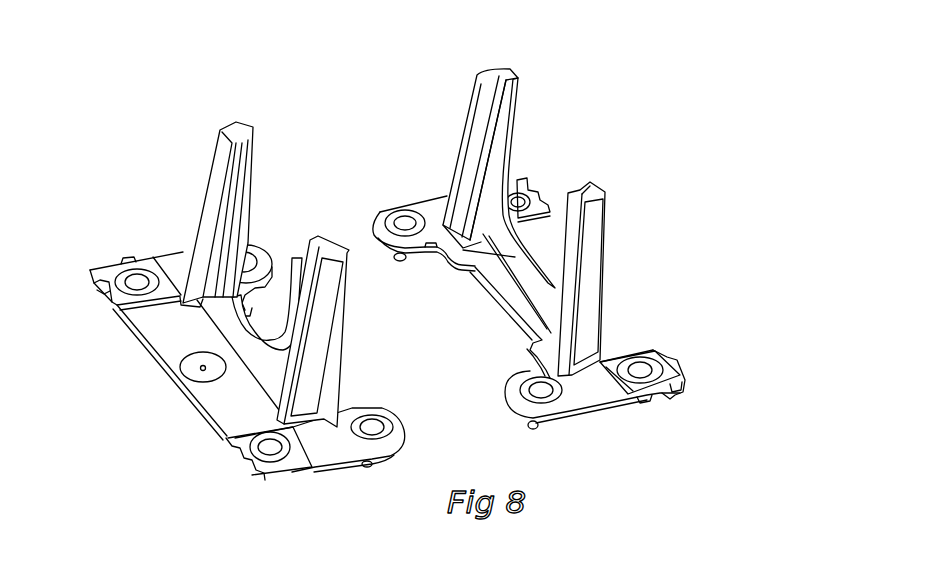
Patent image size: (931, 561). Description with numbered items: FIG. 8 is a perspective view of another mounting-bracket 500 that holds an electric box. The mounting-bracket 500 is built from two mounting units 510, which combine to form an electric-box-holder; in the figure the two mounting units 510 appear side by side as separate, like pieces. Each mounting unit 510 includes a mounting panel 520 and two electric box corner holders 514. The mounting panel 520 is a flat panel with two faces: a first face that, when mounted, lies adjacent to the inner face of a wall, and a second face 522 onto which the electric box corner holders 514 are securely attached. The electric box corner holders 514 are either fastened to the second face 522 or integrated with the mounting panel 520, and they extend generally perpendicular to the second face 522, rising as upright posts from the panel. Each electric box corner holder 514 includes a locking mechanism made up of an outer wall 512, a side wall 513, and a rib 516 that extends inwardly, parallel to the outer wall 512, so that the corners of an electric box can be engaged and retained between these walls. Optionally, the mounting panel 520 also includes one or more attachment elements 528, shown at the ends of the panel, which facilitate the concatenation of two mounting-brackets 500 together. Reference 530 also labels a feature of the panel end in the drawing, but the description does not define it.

The mounting-bracket 500 is at (150, 103).
The mounting unit 510 is at (240, 116).
The outer wall 512 is at (272, 372).
The side wall 513 is at (322, 320).
The electric box corner holder 514 is at (213, 172).
The rib 516 is at (347, 250).
The mounting panel 520 is at (192, 403).
The second face 522 is at (168, 342).
The attachment element 528 is at (127, 260).
The screw hole 530 is at (274, 457).